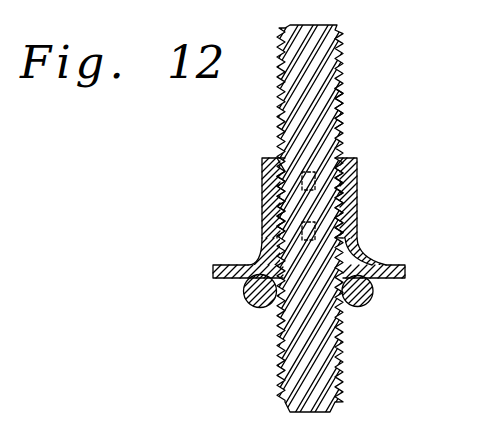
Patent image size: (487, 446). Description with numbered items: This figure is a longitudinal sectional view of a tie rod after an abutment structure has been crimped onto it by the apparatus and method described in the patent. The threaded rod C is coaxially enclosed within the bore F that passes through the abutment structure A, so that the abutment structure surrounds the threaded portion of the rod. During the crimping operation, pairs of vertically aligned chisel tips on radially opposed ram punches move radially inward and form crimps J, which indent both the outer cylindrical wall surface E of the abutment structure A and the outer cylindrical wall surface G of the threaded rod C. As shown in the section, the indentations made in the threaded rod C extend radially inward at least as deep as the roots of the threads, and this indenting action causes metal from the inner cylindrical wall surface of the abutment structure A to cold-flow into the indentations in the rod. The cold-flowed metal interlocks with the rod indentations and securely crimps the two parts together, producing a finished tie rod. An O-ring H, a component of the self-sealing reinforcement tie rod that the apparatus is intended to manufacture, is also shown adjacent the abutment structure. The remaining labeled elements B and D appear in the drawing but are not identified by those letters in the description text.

The abutment structure A is at (303, 210).
The right flange B is at (389, 268).
The threaded rod C is at (342, 68).
The right bead D is at (392, 278).
The outer cylindrical wall surface E is at (357, 180).
The bore F is at (243, 280).
The outer cylindrical wall surface G is at (345, 108).
The O-ring H is at (261, 308).
The crimps J is at (252, 262).